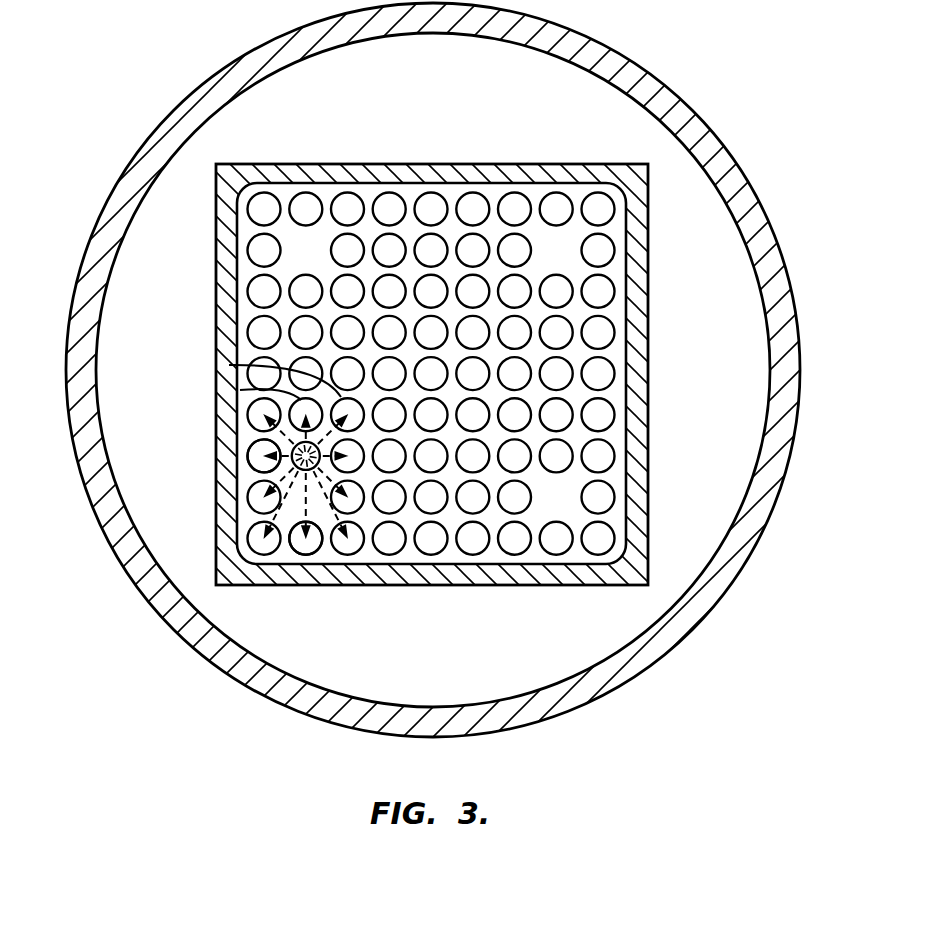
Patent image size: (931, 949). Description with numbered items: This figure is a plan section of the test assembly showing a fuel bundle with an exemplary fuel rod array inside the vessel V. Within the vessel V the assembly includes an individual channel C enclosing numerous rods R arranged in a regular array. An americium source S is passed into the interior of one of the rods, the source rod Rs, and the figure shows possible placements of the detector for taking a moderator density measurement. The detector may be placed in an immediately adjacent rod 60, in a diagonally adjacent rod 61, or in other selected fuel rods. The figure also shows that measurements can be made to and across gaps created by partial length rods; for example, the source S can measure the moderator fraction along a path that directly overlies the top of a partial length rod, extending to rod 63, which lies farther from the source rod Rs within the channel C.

The vessel V is at (183, 100).
The channel C is at (331, 173).
The rods R is at (311, 252).
The americium source S is at (292, 441).
The source rod Rs is at (290, 466).
The immediately adjacent rod 60 is at (240, 390).
The diagonally adjacent rod 61 is at (221, 364).
The rod 63 is at (313, 554).